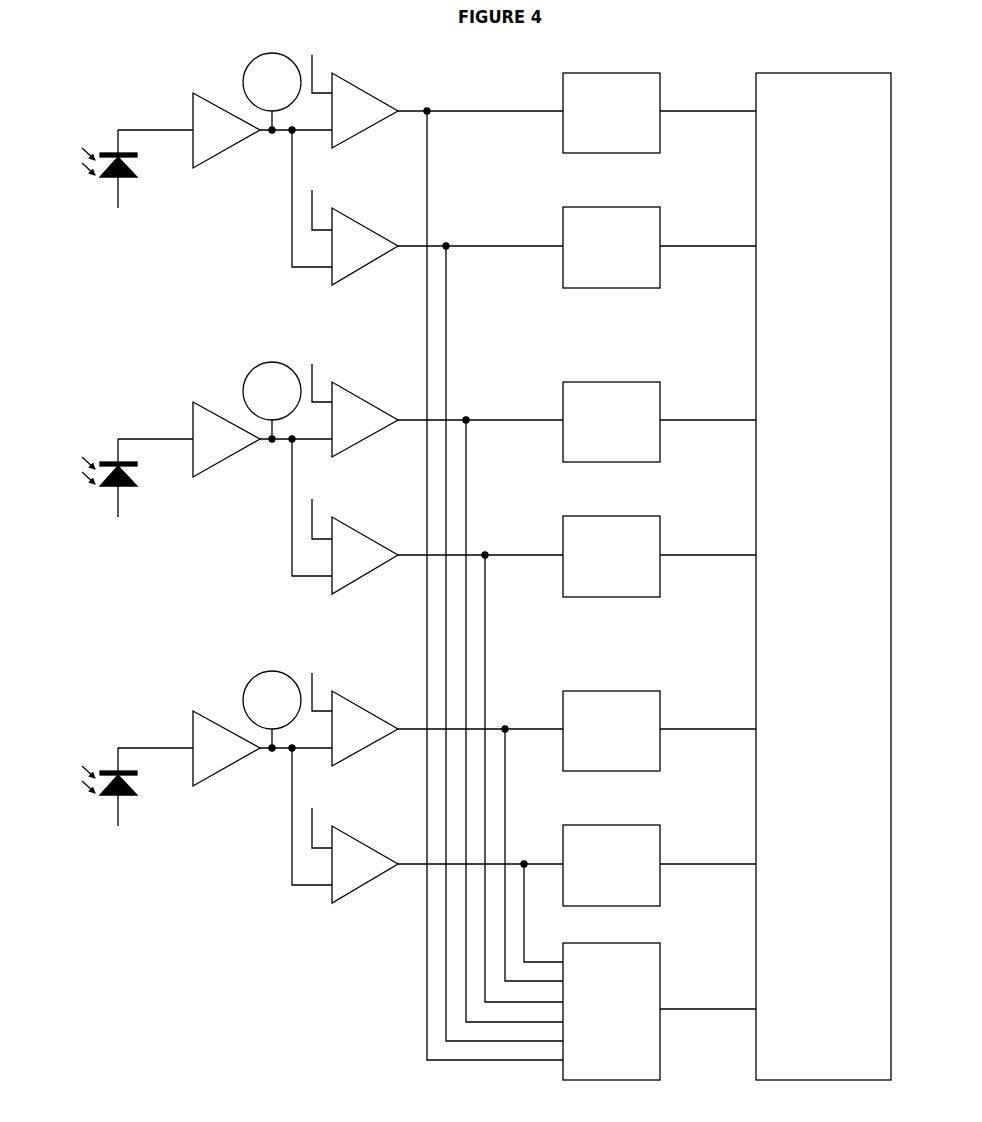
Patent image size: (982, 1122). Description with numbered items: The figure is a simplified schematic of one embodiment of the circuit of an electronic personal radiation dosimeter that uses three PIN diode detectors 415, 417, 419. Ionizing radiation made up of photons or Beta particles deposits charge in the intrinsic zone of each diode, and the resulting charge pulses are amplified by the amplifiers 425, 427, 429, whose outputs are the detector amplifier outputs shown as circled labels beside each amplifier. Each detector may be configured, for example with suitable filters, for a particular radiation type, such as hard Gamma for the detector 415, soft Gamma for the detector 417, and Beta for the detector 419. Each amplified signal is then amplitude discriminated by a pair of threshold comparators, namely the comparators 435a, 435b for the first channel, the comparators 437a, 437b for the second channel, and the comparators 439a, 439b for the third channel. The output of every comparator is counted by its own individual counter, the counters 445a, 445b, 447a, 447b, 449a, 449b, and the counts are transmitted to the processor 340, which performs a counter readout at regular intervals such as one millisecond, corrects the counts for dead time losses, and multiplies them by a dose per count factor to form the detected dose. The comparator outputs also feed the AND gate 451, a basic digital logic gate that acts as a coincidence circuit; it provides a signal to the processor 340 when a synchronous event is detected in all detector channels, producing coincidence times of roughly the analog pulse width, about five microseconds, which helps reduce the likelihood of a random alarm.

The PIN diode detector 415 is at (113, 180).
The PIN diode detector 417 is at (113, 488).
The PIN diode detector 419 is at (113, 797).
The amplifier 425 is at (222, 155).
The amplifier 427 is at (243, 469).
The amplifier 429 is at (246, 778).
The threshold comparator 435a is at (345, 146).
The threshold comparator 435b is at (345, 282).
The threshold comparator 437a is at (437, 428).
The threshold comparator 437b is at (437, 564).
The threshold comparator 439a is at (437, 737).
The threshold comparator 439b is at (437, 873).
The counter 445a is at (659, 113).
The counter 445b is at (659, 247).
The counter 447a is at (659, 422).
The counter 447b is at (659, 556).
The counter 449a is at (659, 731).
The counter 449b is at (659, 865).
The AND gate 451 is at (590, 594).
The processor 340 is at (823, 576).